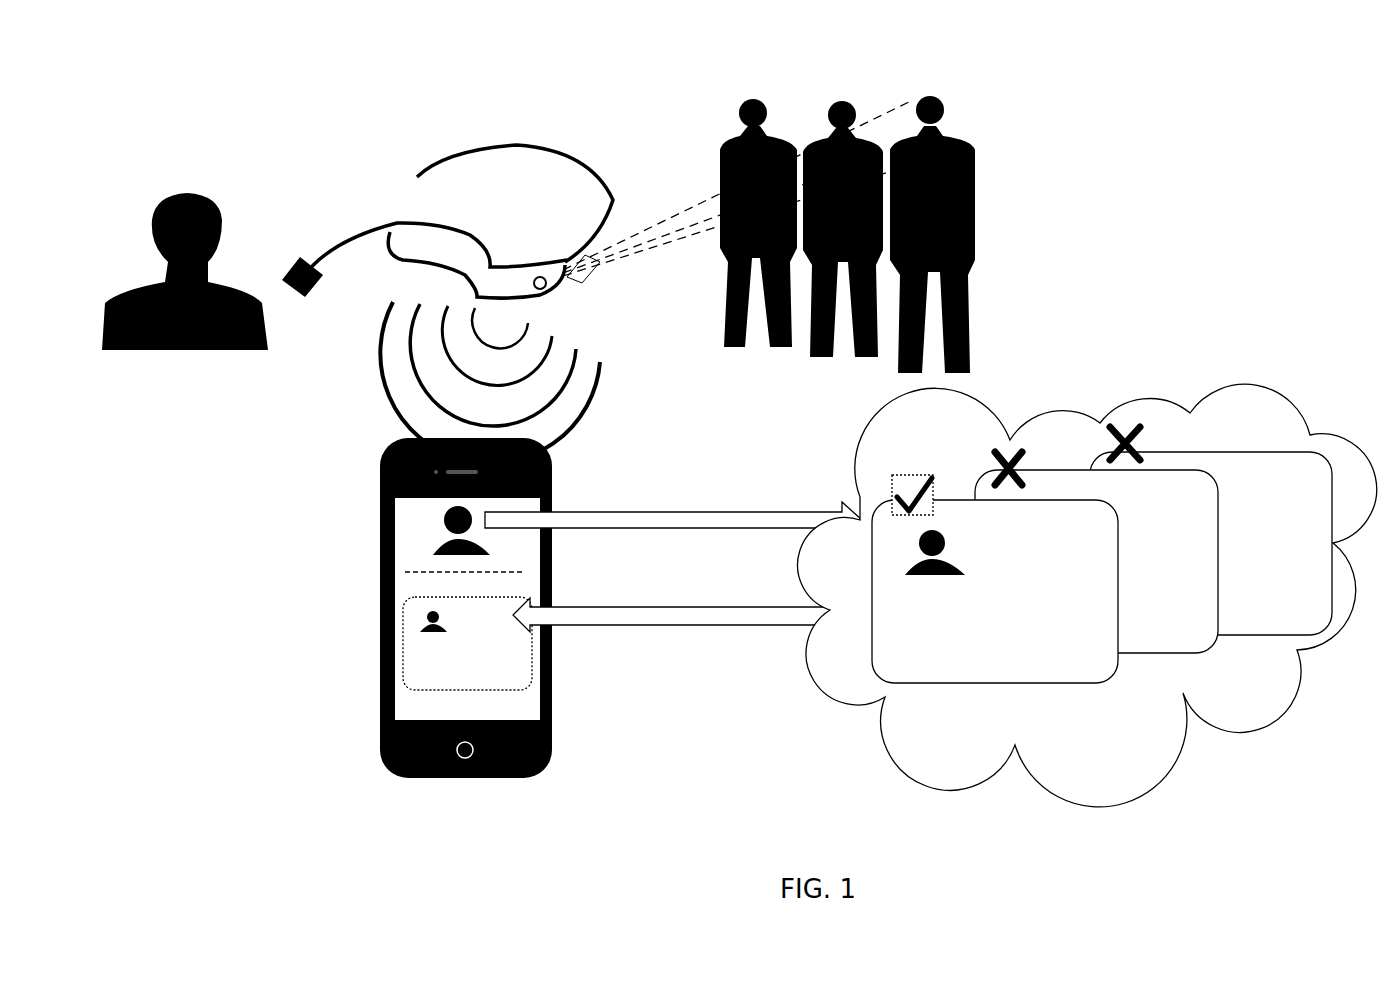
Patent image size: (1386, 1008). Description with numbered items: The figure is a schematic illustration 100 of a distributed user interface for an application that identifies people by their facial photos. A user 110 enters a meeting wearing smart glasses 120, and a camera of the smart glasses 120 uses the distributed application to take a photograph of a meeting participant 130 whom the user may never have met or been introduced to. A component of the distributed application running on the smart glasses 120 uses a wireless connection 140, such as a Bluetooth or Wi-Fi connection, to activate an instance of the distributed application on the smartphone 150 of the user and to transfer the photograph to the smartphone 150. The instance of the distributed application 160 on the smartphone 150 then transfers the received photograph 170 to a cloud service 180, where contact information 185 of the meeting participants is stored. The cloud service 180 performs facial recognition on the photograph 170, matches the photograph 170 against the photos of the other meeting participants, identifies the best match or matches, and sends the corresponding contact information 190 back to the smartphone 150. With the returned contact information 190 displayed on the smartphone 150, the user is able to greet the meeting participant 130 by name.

The schematic illustration 100 is at (1262, 118).
The user 110 is at (170, 187).
The smart glasses 120 is at (425, 212).
The meeting participant 130 is at (912, 98).
The wireless connection 140 is at (405, 303).
The smartphone 150 is at (372, 473).
The instance of the distributed application 160 is at (406, 514).
The photograph 170 is at (428, 537).
The cloud service 180 is at (862, 450).
The contact information 185 is at (1043, 452).
The contact information 190 is at (418, 615).